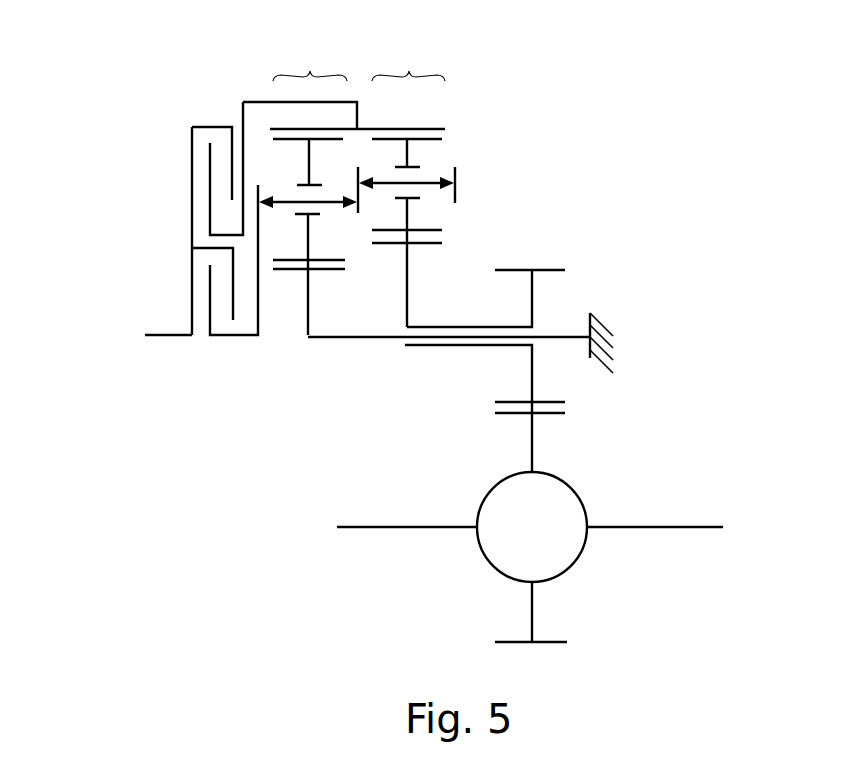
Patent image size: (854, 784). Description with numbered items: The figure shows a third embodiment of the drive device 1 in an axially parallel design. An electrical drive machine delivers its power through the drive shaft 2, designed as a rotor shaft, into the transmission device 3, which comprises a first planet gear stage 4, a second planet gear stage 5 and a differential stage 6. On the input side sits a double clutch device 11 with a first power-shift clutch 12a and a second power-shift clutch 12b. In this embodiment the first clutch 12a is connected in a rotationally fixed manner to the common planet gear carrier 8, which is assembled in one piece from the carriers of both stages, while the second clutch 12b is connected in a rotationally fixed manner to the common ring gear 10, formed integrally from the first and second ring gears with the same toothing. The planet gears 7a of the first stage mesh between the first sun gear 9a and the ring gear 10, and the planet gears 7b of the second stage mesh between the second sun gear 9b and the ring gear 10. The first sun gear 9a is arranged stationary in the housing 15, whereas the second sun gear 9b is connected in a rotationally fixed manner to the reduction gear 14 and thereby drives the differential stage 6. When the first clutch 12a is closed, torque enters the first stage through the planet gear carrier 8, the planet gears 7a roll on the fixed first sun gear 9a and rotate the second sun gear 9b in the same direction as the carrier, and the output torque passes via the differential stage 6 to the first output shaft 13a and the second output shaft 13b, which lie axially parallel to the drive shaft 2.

The drive device 1 is at (108, 60).
The drive shaft 2 is at (175, 337).
The transmission device 3 is at (569, 148).
The first planet gear stage 4 is at (310, 65).
The second planet gear stage 5 is at (408, 65).
The differential stage 6 is at (532, 528).
The planet gears of the first planet set 7a is at (305, 158).
The planet gears of the second planet set 7b is at (409, 158).
The common planet gear carrier 8 is at (425, 184).
The first sun gear 9a is at (310, 300).
The second sun gear 9b is at (408, 296).
The common ring gear 10 is at (437, 128).
The double clutch device 11 is at (176, 132).
The first power-shift clutch 12a is at (208, 290).
The second power-shift clutch 12b is at (210, 171).
The first output shaft 13a is at (417, 524).
The second output shaft 13b is at (652, 525).
The reduction gear 14 is at (534, 383).
The housing 15 is at (612, 338).